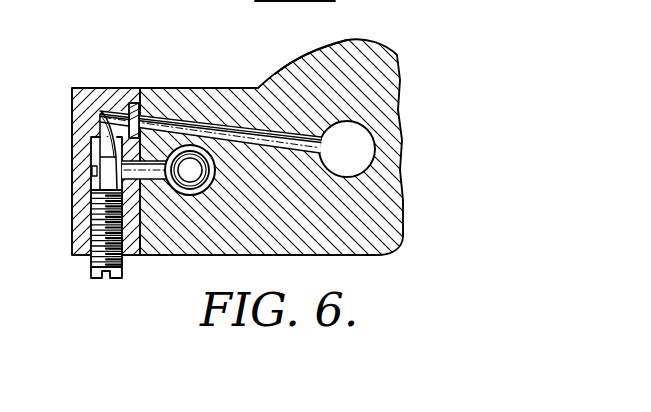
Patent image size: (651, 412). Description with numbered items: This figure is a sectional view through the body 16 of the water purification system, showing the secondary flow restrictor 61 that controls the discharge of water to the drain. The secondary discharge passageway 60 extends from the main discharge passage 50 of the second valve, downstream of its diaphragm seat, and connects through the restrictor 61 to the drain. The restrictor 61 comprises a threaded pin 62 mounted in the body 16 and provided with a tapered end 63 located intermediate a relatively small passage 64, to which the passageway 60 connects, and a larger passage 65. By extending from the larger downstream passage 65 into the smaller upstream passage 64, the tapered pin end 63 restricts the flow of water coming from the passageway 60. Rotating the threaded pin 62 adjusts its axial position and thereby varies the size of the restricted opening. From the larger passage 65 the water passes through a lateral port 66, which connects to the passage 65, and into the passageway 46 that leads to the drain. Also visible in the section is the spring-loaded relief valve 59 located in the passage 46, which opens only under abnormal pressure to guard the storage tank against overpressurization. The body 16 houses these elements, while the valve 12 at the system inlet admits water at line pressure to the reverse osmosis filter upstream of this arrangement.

The valve 12 is at (366, 30).
The body 16 is at (317, 53).
The passage 46 is at (216, 176).
The main discharge passage 50 is at (371, 148).
The spring-loaded relief valve 59 is at (190, 180).
The secondary discharge passageway 60 is at (196, 115).
The flow restrictor 61 is at (78, 131).
The threaded pin 62 is at (92, 266).
The tapered end 63 is at (103, 147).
The passage 64 is at (100, 116).
The passage 65 is at (93, 171).
The lateral port 66 is at (133, 178).